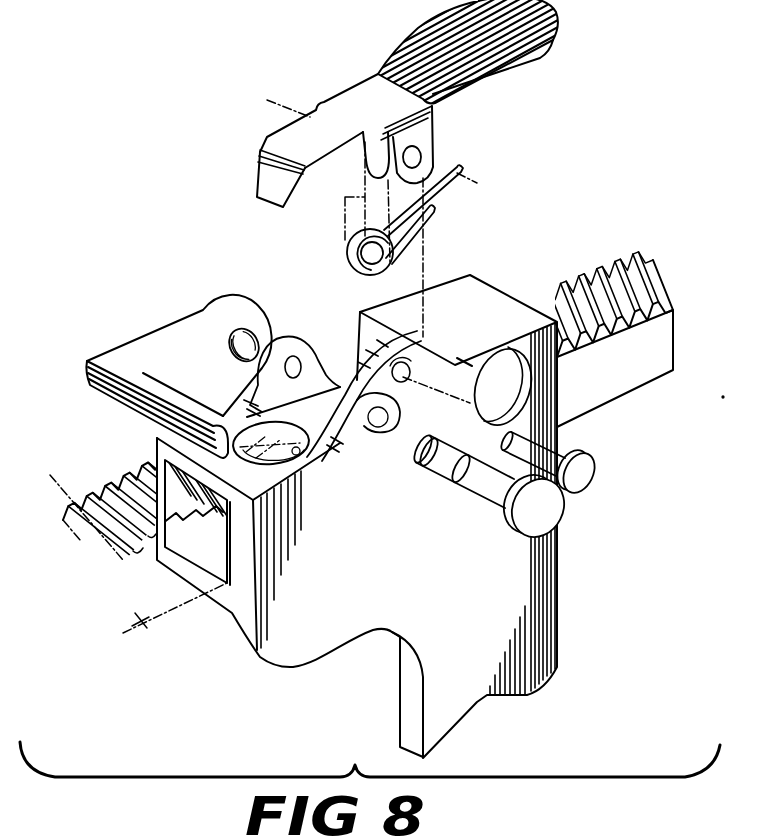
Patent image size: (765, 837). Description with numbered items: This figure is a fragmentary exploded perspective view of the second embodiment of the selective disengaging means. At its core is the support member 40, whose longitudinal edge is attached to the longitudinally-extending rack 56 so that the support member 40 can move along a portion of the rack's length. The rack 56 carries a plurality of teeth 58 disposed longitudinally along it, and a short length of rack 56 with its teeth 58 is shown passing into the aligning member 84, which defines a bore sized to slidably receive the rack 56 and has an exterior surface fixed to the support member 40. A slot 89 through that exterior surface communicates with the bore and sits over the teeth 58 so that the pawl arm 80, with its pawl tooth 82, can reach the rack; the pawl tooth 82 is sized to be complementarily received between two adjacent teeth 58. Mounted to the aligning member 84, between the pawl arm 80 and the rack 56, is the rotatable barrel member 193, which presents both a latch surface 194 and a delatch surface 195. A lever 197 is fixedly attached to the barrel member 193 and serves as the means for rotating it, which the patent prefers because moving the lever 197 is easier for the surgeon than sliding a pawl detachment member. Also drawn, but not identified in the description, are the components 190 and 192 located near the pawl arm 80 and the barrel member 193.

The support member 40 is at (540, 653).
The rack 56 is at (613, 382).
The teeth 58 is at (62, 492).
The pawl arm 80 is at (360, 100).
The pawl tooth 82 is at (268, 203).
The aligning member 84 is at (160, 457).
The slot 89 is at (296, 454).
The pivot pin 190 is at (594, 480).
The torsion spring 192 is at (443, 186).
The barrel member 193 is at (555, 520).
The latch surface 194 is at (482, 478).
The delatch surface 195 is at (482, 504).
The lever 197 is at (160, 343).